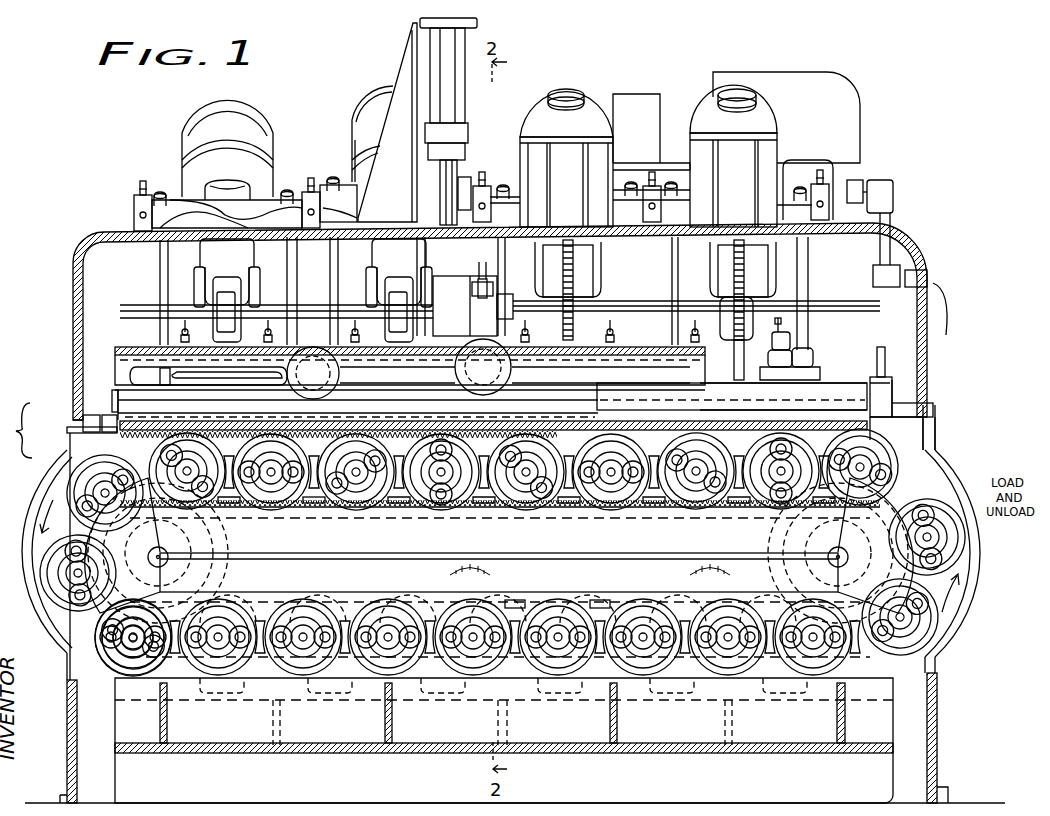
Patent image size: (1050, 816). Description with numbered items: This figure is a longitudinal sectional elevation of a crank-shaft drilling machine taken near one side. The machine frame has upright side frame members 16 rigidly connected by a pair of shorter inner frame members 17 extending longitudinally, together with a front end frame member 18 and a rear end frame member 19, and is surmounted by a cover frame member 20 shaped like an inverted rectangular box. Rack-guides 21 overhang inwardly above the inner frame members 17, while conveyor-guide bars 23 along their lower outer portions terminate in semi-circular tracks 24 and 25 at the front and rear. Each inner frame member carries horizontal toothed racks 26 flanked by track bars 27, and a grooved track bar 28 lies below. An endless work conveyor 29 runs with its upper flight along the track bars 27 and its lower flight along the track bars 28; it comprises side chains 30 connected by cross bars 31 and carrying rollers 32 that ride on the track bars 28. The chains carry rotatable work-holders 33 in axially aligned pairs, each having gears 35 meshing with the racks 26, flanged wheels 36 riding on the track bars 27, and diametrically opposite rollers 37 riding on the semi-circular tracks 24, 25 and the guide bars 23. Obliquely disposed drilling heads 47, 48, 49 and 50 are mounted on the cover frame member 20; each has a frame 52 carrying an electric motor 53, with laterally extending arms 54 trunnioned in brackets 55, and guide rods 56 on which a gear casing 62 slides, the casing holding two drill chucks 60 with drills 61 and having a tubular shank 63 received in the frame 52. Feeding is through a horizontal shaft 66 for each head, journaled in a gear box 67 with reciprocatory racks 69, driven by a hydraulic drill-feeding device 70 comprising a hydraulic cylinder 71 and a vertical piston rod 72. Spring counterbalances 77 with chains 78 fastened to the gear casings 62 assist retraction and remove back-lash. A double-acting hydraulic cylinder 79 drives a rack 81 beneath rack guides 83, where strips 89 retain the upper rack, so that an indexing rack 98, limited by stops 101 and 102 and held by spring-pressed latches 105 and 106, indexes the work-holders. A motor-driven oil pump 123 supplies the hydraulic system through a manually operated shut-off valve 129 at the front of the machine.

The side frame member 16 is at (880, 763).
The inner frame member 17 is at (298, 585).
The front end frame member 18 is at (938, 718).
The rear end frame member 19 is at (67, 722).
The cover frame member 20 is at (72, 276).
The rack-guide 21 is at (848, 415).
The conveyor-guide bar 23 is at (350, 606).
The semi-circular track 24 is at (880, 595).
The semi-circular track 25 is at (100, 613).
The toothed rack 26 is at (312, 495).
The track bar 27 is at (343, 508).
The grooved track bar 28 is at (442, 680).
The endless work conveyor 29 is at (960, 545).
The side chain 30 is at (343, 680).
The cross bar 31 is at (400, 510).
The roller 32 is at (900, 617).
The work-holder 33 is at (528, 495).
The gear 35 is at (16, 430).
The flanged wheel 36 is at (612, 495).
The roller 37 is at (443, 495).
The drilling head 47 is at (720, 100).
The drilling head 48 is at (585, 95).
The drilling head 49 is at (360, 97).
The drilling head 50 is at (255, 120).
The drilling head frame 52 is at (210, 215).
The electric motor 53 is at (197, 152).
The arm 54 is at (165, 200).
The bracket 55 is at (137, 200).
The guide rod 56 is at (160, 264).
The drill chuck 60 is at (783, 333).
The drill 61 is at (780, 325).
The gear casing 62 is at (815, 352).
The tubular shank 63 is at (730, 370).
The horizontal shaft 66 is at (315, 303).
The gear box 67 is at (473, 306).
The reciprocatory rack 69 is at (482, 279).
The drill-feeding device 70 is at (477, 22).
The hydraulic cylinder 71 is at (455, 88).
The piston rod 72 is at (455, 166).
The spring counterbalance 77 is at (745, 275).
The chain 78 is at (780, 320).
The double-acting hydraulic cylinder 79 is at (832, 383).
The rack 81 is at (113, 393).
The rack guide 83 is at (130, 357).
The strip 89 is at (150, 347).
The indexing rack 98 is at (110, 564).
The stop 101 is at (895, 410).
The stop 102 is at (95, 415).
The spring pressed latch 105 is at (885, 422).
The spring pressed latch 106 is at (92, 553).
The motor-driven oil pump 123 is at (632, 100).
The shut-off valve 129 is at (938, 272).